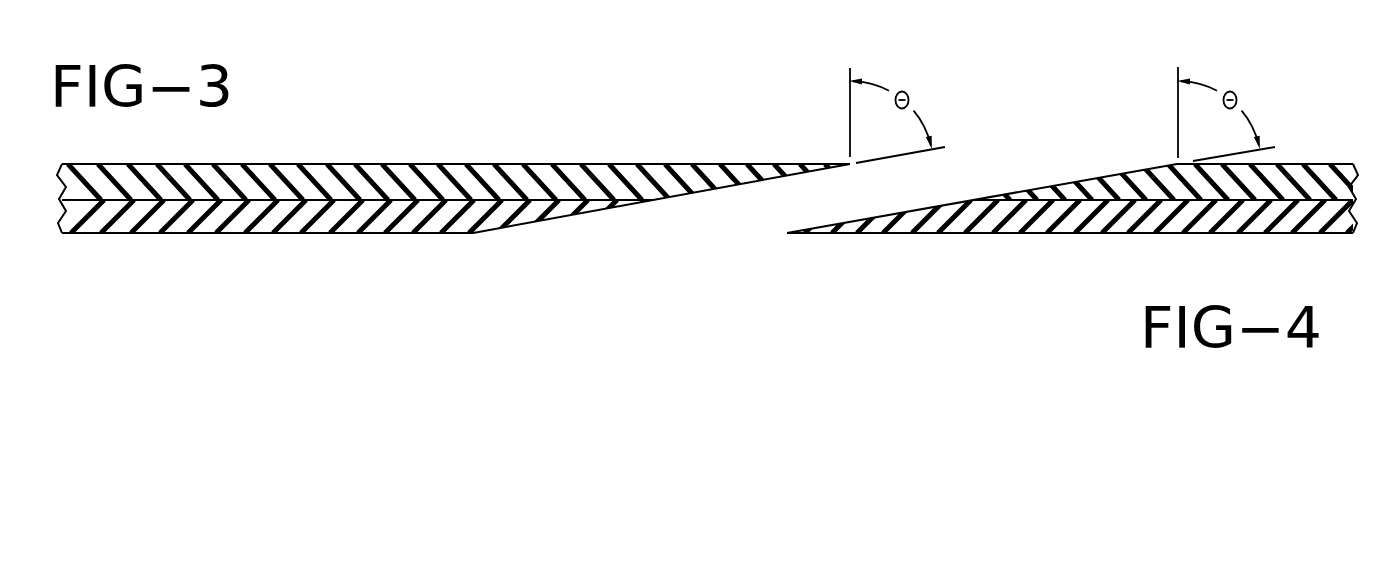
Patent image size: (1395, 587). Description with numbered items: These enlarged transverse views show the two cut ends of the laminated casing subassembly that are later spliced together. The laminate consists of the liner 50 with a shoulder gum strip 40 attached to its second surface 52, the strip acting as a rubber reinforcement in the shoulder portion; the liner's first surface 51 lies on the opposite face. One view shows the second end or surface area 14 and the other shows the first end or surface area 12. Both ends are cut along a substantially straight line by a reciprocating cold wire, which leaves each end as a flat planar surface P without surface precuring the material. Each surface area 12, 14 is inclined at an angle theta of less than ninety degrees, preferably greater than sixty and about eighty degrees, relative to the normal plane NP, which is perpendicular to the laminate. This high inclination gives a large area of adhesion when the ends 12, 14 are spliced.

In FIG. 4, the first end or surface area 12 is at (1120, 165).
In FIG. 3, the second end or surface area 14 is at (548, 234).
In FIG. 3, the shoulder gum strip 40 is at (164, 220).
In FIG. 4, the shoulder gum strip 40 is at (985, 220).
In FIG. 3, the liner 50 is at (395, 170).
In FIG. 4, the liner 50 is at (1300, 164).
In FIG. 3, the first surface 51 is at (546, 164).
In FIG. 4, the first surface 51 is at (1352, 164).
In FIG. 3, the second surface 52 is at (292, 200).
In FIG. 4, the second surface 52 is at (1088, 201).
In FIG. 3, the flat planar surface P is at (478, 234).
In FIG. 4, the flat planar surface P is at (1062, 183).
In FIG. 3, the normal plane NP is at (883, 97).
In FIG. 4, the normal plane NP is at (1211, 97).